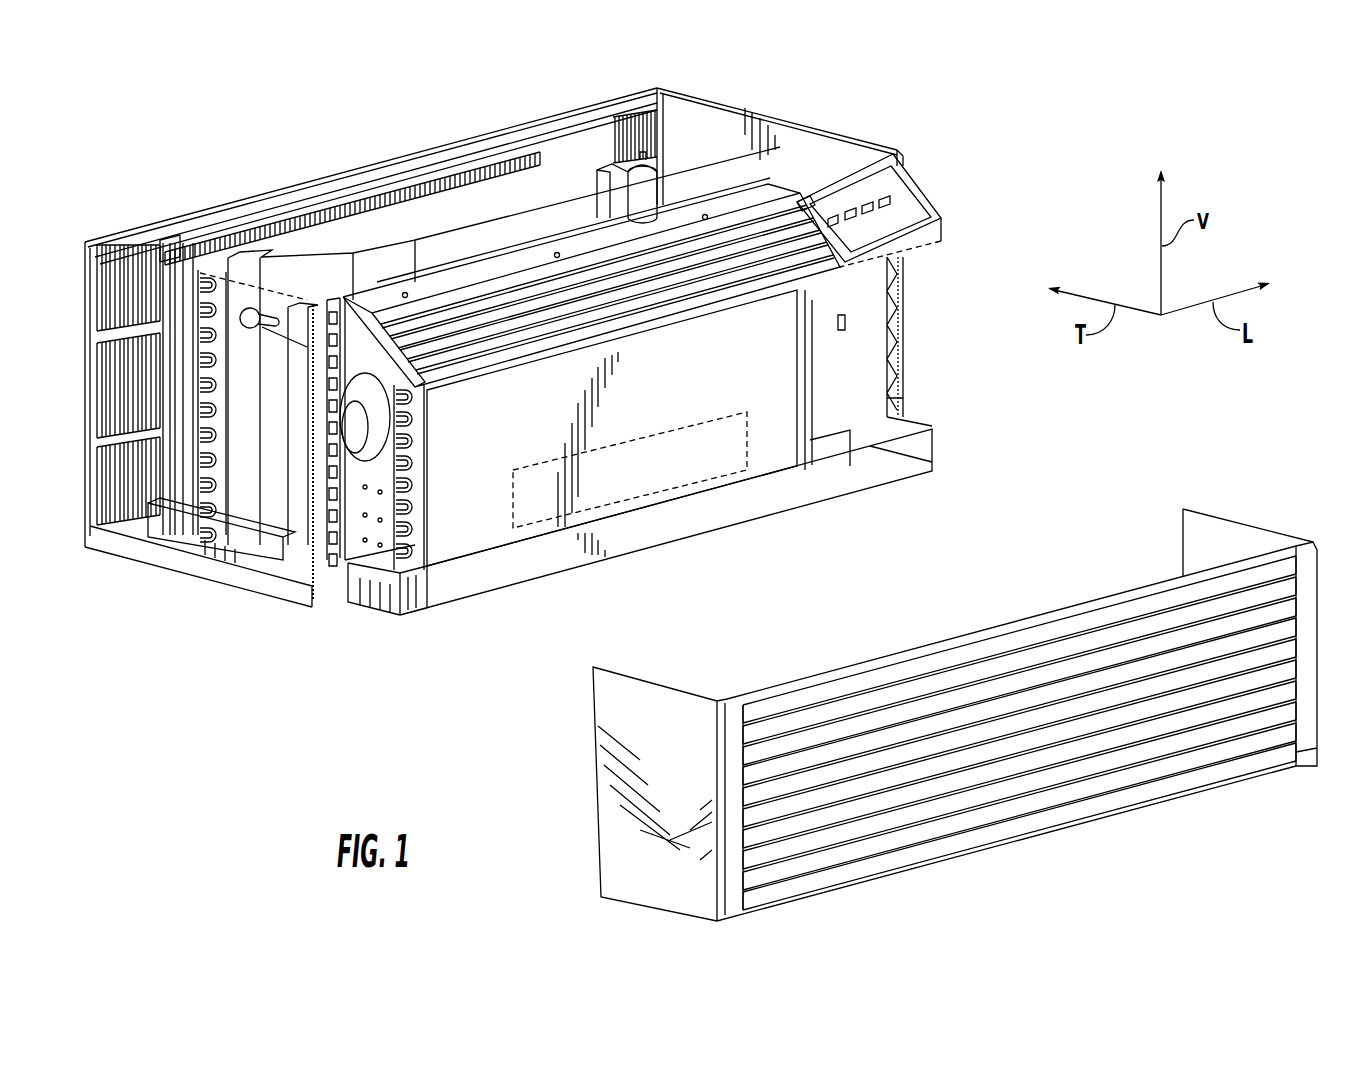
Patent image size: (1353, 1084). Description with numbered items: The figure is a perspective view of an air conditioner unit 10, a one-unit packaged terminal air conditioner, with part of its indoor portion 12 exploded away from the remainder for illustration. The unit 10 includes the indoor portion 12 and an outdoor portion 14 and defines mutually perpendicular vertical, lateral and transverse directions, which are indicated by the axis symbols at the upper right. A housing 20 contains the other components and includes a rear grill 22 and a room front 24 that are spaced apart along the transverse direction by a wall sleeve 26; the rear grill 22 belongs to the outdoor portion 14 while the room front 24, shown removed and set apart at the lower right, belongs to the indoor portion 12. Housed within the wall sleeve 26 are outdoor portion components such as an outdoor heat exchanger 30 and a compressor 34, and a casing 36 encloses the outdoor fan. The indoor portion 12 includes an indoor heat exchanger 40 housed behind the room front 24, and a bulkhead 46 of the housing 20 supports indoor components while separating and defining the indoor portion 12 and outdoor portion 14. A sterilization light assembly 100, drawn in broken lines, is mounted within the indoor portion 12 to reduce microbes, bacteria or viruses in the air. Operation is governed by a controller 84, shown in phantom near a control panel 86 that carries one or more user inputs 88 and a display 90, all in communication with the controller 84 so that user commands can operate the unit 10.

The air conditioner unit 10 is at (1043, 154).
The indoor portion 12 is at (361, 622).
The outdoor portion 14 is at (191, 592).
The housing 20 is at (877, 124).
The rear grill 22 is at (450, 147).
The room front 24 is at (1003, 628).
The wall sleeve 26 is at (753, 133).
The outdoor heat exchanger 30 is at (203, 438).
The compressor 34 is at (647, 188).
The casing 36 is at (370, 233).
The indoor heat exchanger 40 is at (462, 532).
The bulkhead 46 is at (315, 514).
The controller 84 is at (943, 232).
The control panel 86 is at (905, 202).
The user inputs 88 is at (883, 203).
The display 90 is at (812, 200).
The sterilization light assembly 100 is at (693, 422).